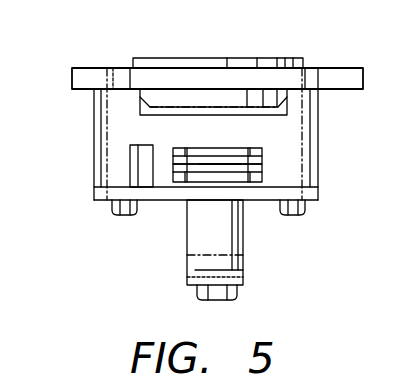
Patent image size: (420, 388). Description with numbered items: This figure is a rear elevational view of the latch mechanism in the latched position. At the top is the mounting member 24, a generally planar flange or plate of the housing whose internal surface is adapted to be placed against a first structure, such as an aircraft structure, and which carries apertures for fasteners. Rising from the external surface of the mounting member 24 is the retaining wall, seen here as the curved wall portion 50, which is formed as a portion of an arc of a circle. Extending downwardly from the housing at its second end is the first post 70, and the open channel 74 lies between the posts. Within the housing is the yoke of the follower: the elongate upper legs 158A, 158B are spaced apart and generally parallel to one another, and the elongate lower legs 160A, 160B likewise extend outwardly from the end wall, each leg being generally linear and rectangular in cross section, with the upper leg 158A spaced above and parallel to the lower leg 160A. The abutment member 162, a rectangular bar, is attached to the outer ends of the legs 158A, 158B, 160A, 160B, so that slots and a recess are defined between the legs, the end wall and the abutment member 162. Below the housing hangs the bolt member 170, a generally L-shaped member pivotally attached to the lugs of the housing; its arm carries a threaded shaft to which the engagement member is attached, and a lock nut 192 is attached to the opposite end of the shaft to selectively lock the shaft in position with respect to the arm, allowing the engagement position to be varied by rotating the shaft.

The mounting member 24 is at (348, 78).
The curved wall portion 50 is at (202, 63).
The first post 70 is at (293, 170).
The open channel 74 is at (162, 168).
The upper leg 158A is at (175, 152).
The upper leg 158B is at (262, 152).
The lower leg 160A is at (185, 178).
The lower leg 160B is at (247, 180).
The abutment member 162 is at (225, 165).
The bolt member 170 is at (247, 275).
The lock nut 192 is at (223, 298).